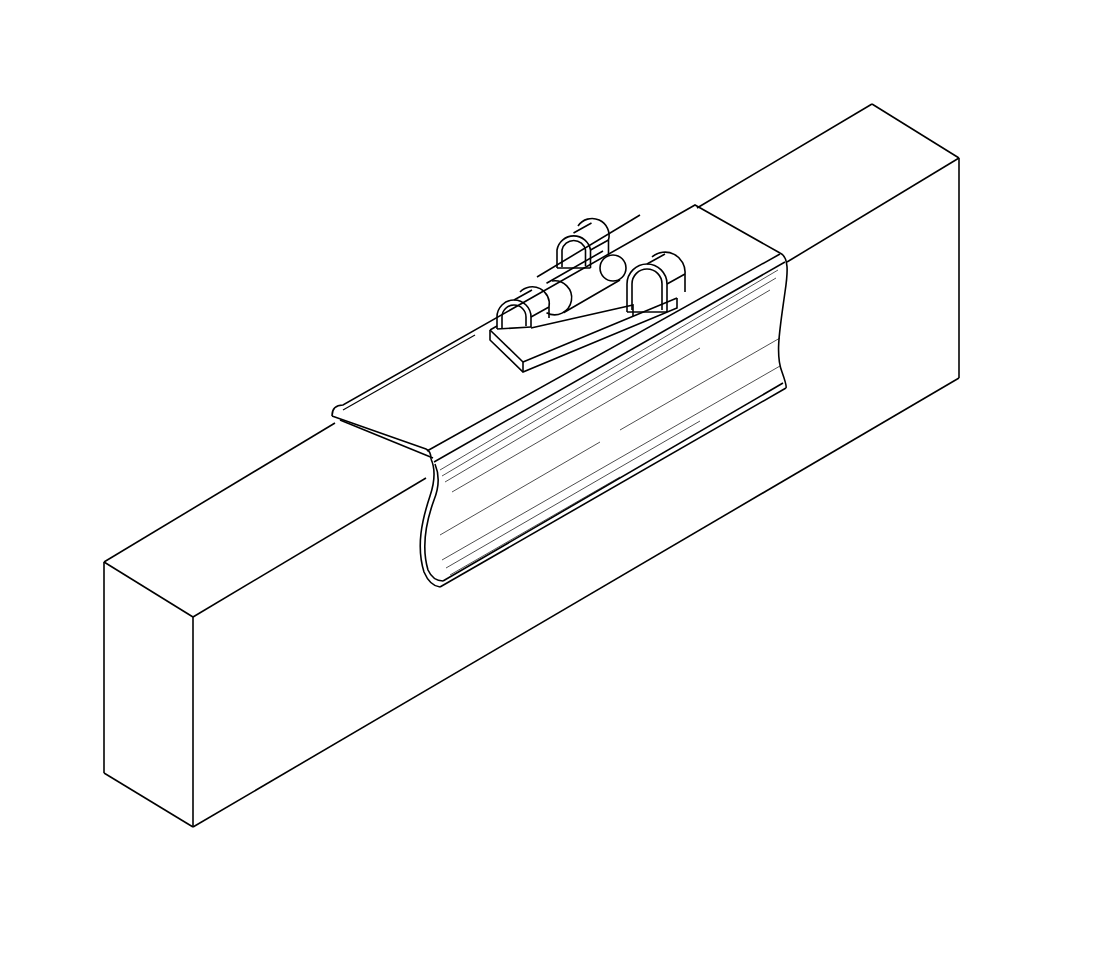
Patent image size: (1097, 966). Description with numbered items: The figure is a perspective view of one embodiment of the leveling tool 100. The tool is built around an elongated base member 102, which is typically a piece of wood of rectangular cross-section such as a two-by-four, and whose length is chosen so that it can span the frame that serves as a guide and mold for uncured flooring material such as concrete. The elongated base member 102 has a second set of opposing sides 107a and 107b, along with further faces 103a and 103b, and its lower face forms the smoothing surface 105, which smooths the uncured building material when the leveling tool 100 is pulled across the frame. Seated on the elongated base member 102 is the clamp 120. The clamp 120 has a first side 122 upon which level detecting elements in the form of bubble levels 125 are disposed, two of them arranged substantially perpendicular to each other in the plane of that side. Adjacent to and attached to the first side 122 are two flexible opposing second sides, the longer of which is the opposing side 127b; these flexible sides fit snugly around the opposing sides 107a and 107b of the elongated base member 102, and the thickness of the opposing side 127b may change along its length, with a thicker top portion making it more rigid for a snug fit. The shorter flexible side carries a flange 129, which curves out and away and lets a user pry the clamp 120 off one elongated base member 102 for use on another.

The leveling tool 100 is at (804, 84).
The elongated base member 102 is at (233, 507).
The upper surface 103a is at (155, 590).
The lower surface 103b is at (142, 797).
The smoothing surface 105 is at (873, 427).
The opposing side of elongated member 107a is at (103, 668).
The opposing side of elongated member 107b is at (193, 730).
The clamp 120 is at (641, 176).
The first side of clamp 122 is at (708, 237).
The bubble level 125 is at (522, 280).
The flexible opposing second side of clamp 127b is at (328, 412).
The flange 129 is at (638, 473).